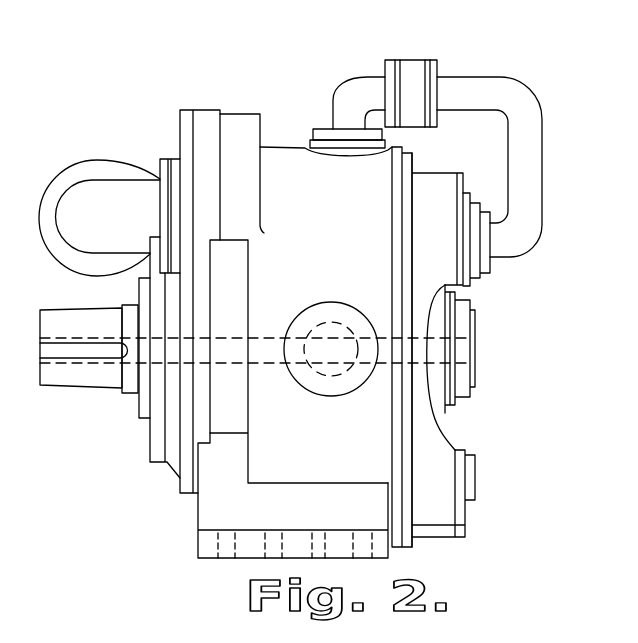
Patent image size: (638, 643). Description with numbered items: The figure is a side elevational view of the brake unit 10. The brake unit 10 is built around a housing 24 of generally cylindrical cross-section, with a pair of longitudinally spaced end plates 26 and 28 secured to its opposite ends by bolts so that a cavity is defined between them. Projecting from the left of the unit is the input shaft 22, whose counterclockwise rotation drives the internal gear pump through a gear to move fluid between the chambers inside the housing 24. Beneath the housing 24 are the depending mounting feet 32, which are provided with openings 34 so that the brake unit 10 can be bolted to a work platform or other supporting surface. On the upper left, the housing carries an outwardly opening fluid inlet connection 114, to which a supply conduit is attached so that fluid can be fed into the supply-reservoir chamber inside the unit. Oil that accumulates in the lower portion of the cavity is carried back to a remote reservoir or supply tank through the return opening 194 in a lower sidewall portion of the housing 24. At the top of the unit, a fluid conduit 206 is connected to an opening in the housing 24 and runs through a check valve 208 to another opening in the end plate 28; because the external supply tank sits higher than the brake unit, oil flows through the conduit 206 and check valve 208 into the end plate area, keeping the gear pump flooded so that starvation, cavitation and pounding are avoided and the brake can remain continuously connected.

The brake unit 10 is at (302, 79).
The input shaft 22 is at (73, 384).
The housing 24 is at (288, 162).
The end plate 26 is at (155, 453).
The end plate 28 is at (462, 452).
The mounting feet 32 is at (197, 556).
The openings 34 is at (233, 549).
The fluid inlet connection 114 is at (97, 167).
The return opening 194 is at (320, 392).
The fluid conduit 206 is at (365, 86).
The check valve 208 is at (412, 66).